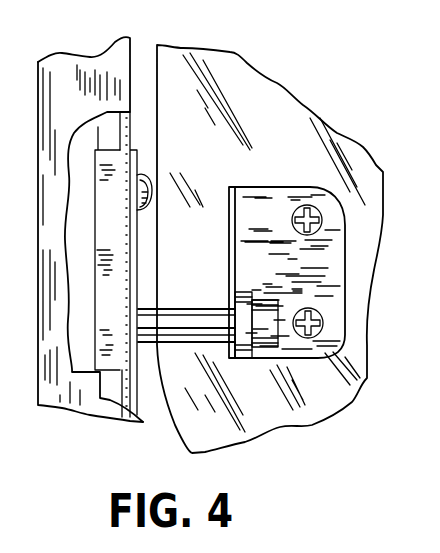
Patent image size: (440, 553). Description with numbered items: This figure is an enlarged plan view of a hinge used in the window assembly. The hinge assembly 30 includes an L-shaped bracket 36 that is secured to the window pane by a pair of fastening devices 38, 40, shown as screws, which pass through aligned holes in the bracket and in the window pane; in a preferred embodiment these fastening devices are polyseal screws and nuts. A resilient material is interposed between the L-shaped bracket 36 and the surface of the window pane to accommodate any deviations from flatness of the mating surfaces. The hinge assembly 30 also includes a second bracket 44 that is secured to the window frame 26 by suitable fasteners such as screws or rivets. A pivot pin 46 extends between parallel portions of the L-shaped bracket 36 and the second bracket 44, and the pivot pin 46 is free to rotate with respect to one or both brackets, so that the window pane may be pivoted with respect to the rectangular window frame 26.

The window frame 26 is at (97, 56).
The hinge assembly 30 is at (218, 357).
The L-shaped bracket 36 is at (298, 197).
The fastening device 38 is at (324, 336).
The fastening device 40 is at (323, 220).
The second bracket 44 is at (103, 307).
The pivot pin 46 is at (194, 328).